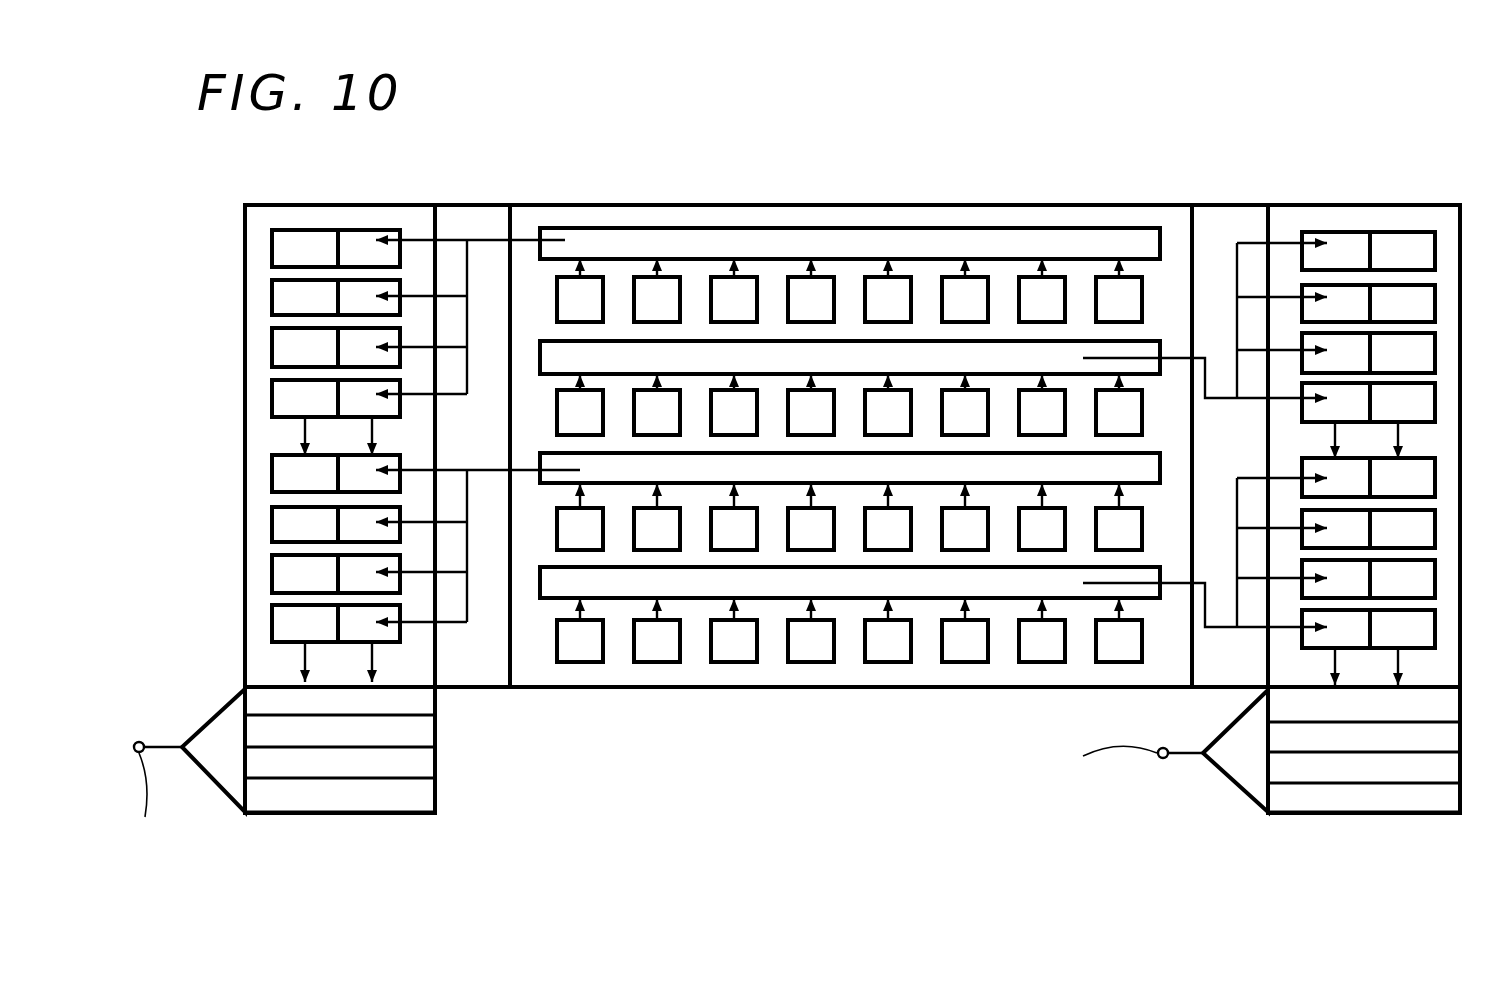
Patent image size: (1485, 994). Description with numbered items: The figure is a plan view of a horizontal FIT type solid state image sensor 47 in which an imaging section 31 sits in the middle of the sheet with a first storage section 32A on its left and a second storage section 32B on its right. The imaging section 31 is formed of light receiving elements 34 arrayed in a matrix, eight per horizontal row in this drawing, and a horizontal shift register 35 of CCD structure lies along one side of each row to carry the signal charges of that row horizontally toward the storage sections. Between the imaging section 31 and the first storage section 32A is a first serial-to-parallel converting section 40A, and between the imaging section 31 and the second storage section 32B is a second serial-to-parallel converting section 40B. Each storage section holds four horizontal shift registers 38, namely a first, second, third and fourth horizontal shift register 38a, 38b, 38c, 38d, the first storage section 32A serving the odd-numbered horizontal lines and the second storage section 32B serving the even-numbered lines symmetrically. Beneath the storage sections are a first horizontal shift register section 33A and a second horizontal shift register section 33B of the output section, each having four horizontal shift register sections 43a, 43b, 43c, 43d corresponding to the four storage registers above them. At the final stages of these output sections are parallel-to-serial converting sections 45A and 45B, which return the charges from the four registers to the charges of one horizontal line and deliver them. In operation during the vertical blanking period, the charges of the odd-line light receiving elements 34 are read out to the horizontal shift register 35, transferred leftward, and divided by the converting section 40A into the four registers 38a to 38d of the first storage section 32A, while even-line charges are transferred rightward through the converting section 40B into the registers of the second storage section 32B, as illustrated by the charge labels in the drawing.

The horizontal FIT type solid state image sensor 47 is at (185, 183).
The imaging section 31 is at (850, 204).
The first storage section 32A is at (405, 204).
The second storage section 32B is at (1395, 204).
The first horizontal shift register section 33A is at (400, 814).
The second horizontal shift register section 33B is at (1445, 815).
The light receiving element 34 is at (1143, 291).
The horizontal shift register 35 is at (1001, 243).
The horizontal shift register 38 is at (180, 234).
The first horizontal shift register 38a is at (272, 243).
The second horizontal shift register 38b is at (272, 296).
The third horizontal shift register 38c is at (272, 347).
The fourth horizontal shift register 38d is at (272, 396).
The first serial-to-parallel converting section 40A is at (500, 205).
The second serial-to-parallel converting section 40B is at (1235, 204).
The horizontal shift register section 43a is at (420, 703).
The horizontal shift register section 43b is at (420, 733).
The horizontal shift register section 43c is at (416, 765).
The horizontal shift register section 43d is at (416, 797).
The parallel-to-serial converting section 45A is at (208, 742).
The parallel-to-serial converting section 45B is at (1228, 770).